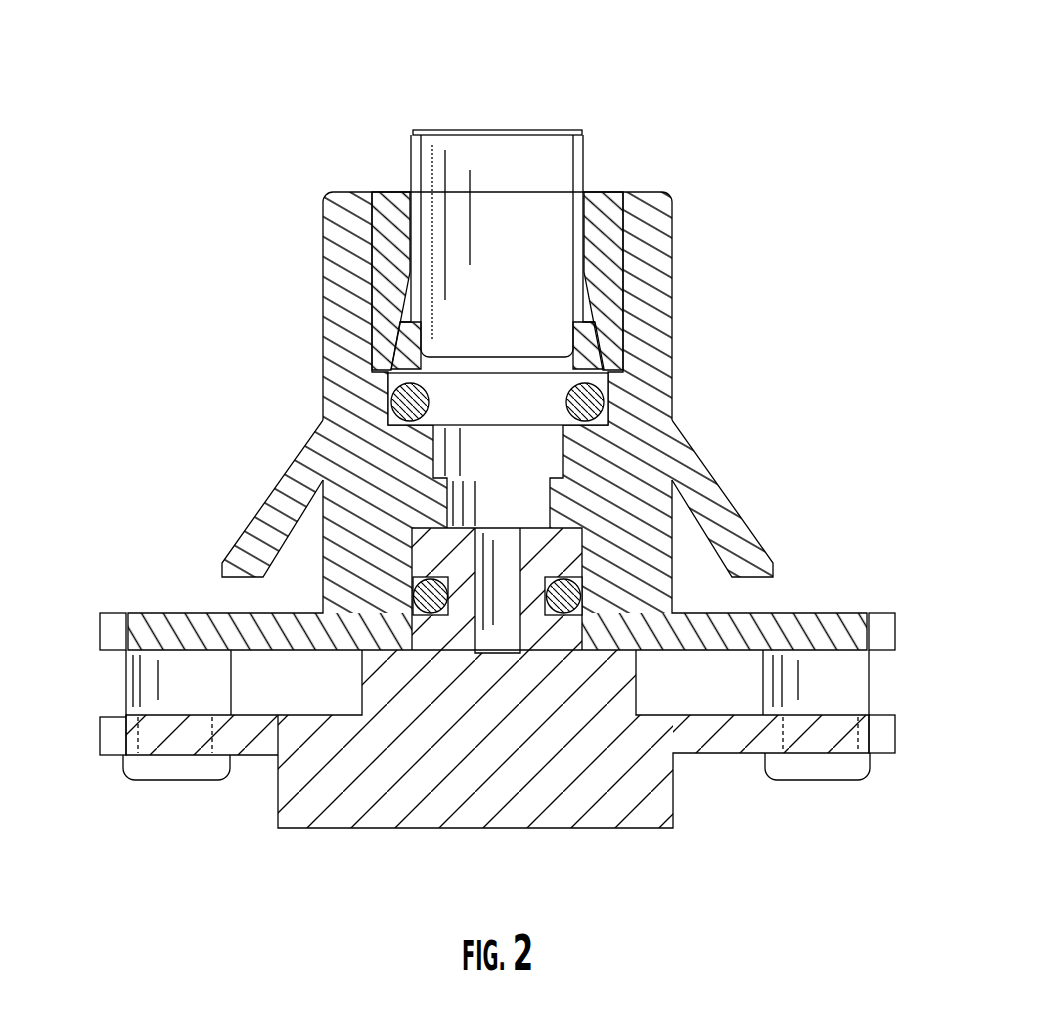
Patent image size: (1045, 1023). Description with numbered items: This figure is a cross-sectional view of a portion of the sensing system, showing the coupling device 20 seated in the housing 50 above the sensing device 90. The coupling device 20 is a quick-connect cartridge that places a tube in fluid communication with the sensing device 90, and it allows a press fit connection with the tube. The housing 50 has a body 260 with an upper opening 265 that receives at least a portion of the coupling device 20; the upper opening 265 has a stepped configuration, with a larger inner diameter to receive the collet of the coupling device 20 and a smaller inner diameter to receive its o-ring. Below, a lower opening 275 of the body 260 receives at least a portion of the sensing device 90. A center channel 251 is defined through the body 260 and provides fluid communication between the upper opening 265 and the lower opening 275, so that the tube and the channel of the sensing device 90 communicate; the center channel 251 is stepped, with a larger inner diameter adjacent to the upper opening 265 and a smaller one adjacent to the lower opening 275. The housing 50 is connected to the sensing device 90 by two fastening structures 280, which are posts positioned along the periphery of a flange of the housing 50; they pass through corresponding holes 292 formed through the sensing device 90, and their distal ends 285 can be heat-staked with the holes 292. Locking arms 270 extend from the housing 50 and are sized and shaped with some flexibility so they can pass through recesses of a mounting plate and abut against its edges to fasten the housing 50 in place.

The coupling device 20 is at (377, 150).
The housing 50 is at (494, 444).
The sensing device 90 is at (497, 644).
The center channel 251 is at (475, 458).
The body 260 is at (657, 373).
The upper opening 265 is at (593, 201).
The locking arms 270 is at (263, 523).
The lower opening 275 is at (575, 541).
The fastening structures 280 is at (158, 693).
The distal ends 285 is at (177, 767).
The holes 292 is at (803, 757).